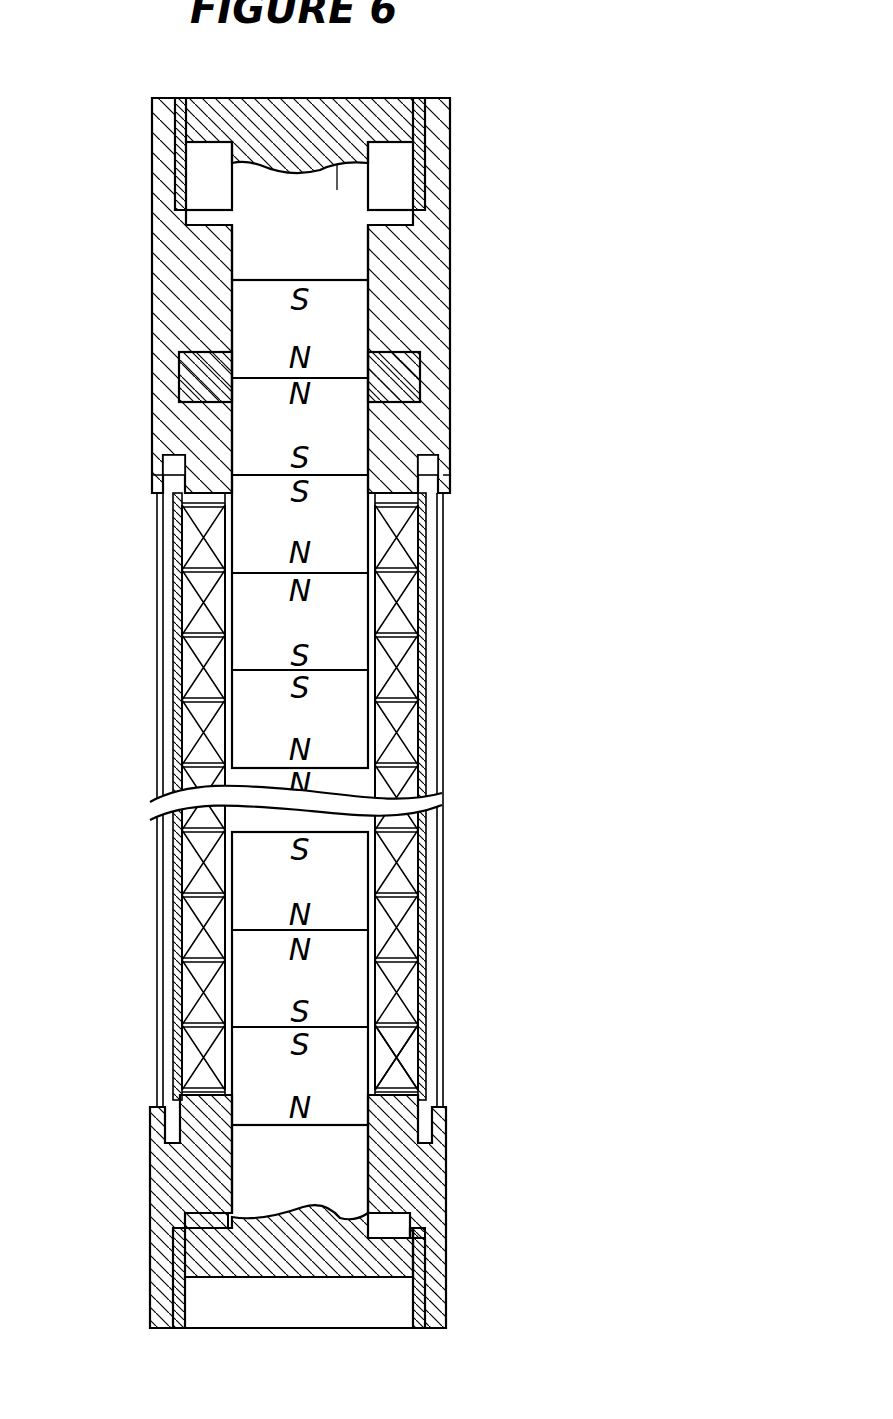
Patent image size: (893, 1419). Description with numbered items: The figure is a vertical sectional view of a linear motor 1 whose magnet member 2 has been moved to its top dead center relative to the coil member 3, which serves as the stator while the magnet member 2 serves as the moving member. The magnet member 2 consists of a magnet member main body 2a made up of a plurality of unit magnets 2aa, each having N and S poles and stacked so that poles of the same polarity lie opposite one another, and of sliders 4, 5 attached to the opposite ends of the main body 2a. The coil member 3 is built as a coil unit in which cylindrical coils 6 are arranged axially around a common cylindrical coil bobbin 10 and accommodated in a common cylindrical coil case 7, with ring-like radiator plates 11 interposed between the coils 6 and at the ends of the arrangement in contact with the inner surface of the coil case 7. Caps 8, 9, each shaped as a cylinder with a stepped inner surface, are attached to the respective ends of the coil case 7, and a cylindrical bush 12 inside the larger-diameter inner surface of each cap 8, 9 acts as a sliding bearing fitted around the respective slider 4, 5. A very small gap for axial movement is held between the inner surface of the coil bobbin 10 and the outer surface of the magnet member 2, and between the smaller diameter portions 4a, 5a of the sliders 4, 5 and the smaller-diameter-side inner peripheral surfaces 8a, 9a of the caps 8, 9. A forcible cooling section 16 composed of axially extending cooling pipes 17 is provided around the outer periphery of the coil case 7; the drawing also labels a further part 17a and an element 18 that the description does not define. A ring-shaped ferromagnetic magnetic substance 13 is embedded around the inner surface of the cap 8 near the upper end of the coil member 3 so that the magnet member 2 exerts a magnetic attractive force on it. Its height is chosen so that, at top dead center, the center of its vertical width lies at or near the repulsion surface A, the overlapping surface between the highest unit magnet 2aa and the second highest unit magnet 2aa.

The linear motor 1 is at (478, 185).
The magnet member 2 is at (350, 737).
The magnet member main body 2a is at (345, 855).
The unit magnet 2aa is at (240, 300).
The coil member 3 is at (455, 925).
The slider 4 is at (308, 152).
The smaller diameter portion 4a is at (337, 187).
The slider 5 is at (350, 1268).
The smaller diameter portion 5a is at (345, 1208).
The coil 6 is at (410, 608).
The coil case 7 is at (420, 583).
The cap 8 is at (148, 250).
The smaller-diameter-side inner peripheral surface 8a is at (372, 254).
The cap 9 is at (148, 1190).
The smaller-diameter-side inner peripheral surface 9a is at (368, 1194).
The coil bobbin 10 is at (385, 1003).
The radiator plate 11 is at (188, 528).
The cylindrical bush 12 is at (180, 120).
The magnetic substance 13 is at (413, 353).
The forcible cooling section 16 is at (442, 885).
The cooling pipe 17 is at (165, 747).
The outer tube wall 17a is at (155, 773).
The bobbin 18 is at (158, 718).
The repulsion surface A is at (265, 378).